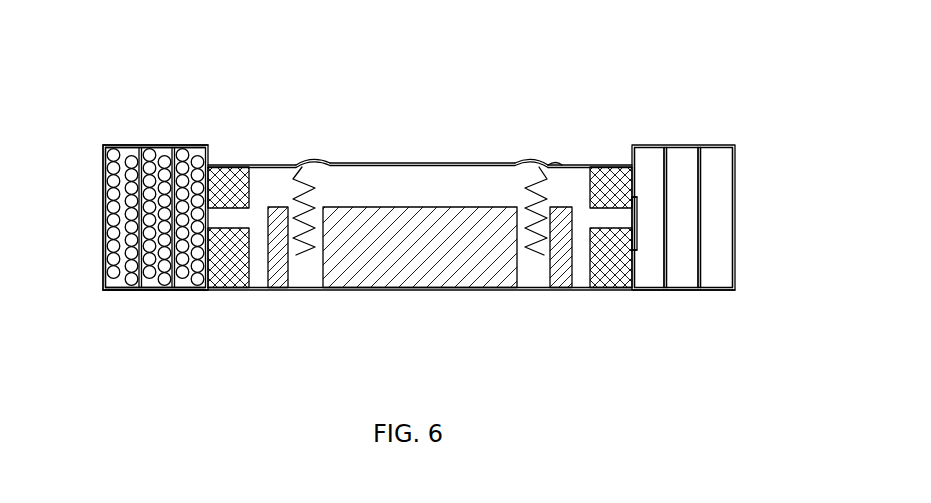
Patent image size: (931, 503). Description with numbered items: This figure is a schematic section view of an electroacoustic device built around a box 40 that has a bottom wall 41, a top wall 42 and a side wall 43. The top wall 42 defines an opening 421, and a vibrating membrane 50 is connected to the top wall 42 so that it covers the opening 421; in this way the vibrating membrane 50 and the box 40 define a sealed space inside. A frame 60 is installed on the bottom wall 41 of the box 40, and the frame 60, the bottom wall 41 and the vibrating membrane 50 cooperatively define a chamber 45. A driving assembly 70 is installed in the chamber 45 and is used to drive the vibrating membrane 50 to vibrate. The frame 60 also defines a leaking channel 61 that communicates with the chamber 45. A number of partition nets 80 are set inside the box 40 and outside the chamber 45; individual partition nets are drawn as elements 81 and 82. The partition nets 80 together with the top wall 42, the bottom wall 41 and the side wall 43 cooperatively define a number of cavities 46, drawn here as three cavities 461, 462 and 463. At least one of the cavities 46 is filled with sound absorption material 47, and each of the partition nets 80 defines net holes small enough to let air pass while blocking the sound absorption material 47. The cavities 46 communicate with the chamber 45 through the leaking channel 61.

The box 40 is at (53, 148).
The bottom wall 41 is at (112, 291).
The top wall 42 is at (128, 144).
The side wall 43 is at (103, 197).
The sound absorption material 47 is at (153, 182).
The chamber 45 is at (422, 191).
The vibrating membrane 50 is at (278, 165).
The frame 60 is at (238, 173).
The leaking channel 61 is at (222, 220).
The driving assembly 70 is at (393, 227).
The opening 421 is at (555, 155).
The cavities 46 is at (703, 80).
The cavity 461 is at (652, 190).
The cavity 462 is at (687, 193).
The cavity 463 is at (717, 195).
The partition nets 80 is at (642, 345).
The seal member 81 is at (637, 248).
The partition walls 82 is at (667, 267).